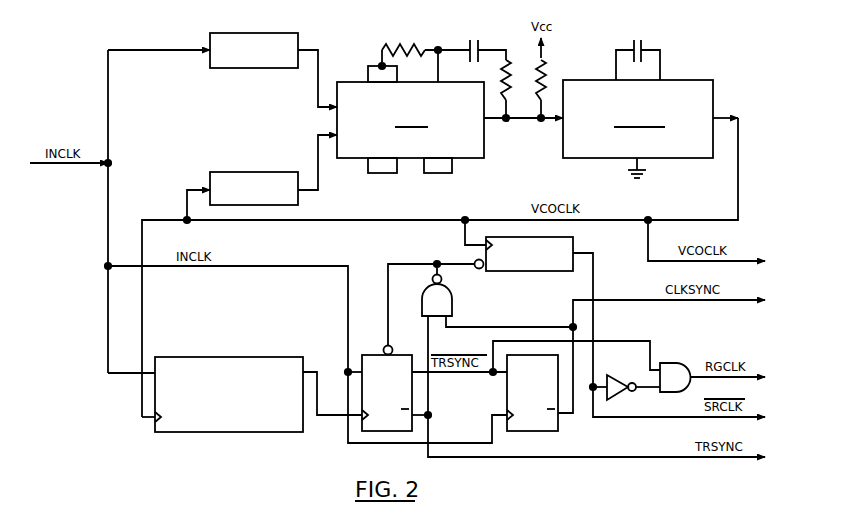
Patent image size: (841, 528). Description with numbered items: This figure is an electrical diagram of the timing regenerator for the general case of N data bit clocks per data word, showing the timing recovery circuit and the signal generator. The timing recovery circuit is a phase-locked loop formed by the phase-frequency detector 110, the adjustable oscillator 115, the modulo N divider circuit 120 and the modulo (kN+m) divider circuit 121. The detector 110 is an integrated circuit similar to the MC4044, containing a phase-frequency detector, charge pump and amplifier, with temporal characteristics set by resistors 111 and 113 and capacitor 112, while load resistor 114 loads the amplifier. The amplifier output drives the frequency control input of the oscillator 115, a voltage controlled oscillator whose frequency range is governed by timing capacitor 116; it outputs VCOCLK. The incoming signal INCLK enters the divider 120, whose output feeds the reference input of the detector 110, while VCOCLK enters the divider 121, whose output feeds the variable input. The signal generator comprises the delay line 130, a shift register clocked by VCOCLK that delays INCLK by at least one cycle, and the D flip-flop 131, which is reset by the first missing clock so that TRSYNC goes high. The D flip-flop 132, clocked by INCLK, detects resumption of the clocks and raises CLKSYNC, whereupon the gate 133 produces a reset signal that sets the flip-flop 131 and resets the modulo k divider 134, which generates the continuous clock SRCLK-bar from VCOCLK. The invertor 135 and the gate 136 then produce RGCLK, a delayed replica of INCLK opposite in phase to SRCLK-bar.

The phase-frequency detector 110 is at (472, 158).
The resistor 111 is at (400, 48).
The capacitor 112 is at (480, 47).
The resistor 113 is at (508, 76).
The load resistor 114 is at (547, 68).
The adjustable oscillator 115 is at (574, 158).
The timing capacitor 116 is at (644, 46).
The modulo N divider circuit 120 is at (277, 33).
The modulo (kN+m) divider circuit 121 is at (277, 172).
The delay line 130 is at (262, 357).
The D flip-flop 131 is at (398, 355).
The D flip-flop 132 is at (561, 431).
The gate 133 is at (452, 300).
The modulo k divider 134 is at (553, 271).
The invertor 135 is at (612, 375).
The gate 136 is at (680, 363).